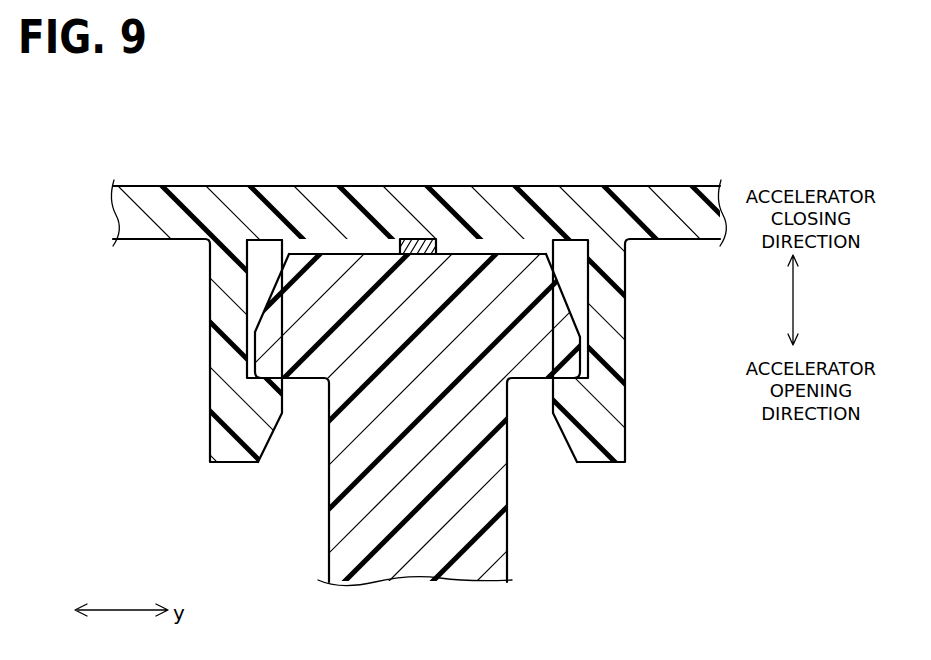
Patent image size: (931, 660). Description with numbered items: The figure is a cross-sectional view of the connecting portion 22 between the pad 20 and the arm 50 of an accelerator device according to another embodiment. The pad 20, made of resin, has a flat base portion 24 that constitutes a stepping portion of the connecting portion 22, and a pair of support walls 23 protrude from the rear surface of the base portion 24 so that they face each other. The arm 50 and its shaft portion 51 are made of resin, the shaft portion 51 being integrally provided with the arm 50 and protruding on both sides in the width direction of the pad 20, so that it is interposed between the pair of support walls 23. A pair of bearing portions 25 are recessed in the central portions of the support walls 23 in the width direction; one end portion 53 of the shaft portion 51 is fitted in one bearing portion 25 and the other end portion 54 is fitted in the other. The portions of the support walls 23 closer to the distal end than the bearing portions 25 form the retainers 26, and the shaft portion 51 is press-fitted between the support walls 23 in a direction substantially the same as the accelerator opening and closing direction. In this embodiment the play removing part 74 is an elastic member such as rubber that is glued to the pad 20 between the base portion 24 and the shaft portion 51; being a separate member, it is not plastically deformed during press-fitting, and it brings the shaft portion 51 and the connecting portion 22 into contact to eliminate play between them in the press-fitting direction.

The pad 20 is at (143, 186).
The connecting portion 22 is at (603, 463).
The support walls 23 is at (218, 343).
The base portion 24 is at (468, 203).
The bearing portions 25 is at (250, 371).
The retainers 26 is at (265, 395).
The arm 50 is at (330, 533).
The shaft portion 51 is at (358, 288).
The one end portion 53 is at (565, 327).
The other end portion 54 is at (272, 327).
The play removing part 74 is at (417, 239).